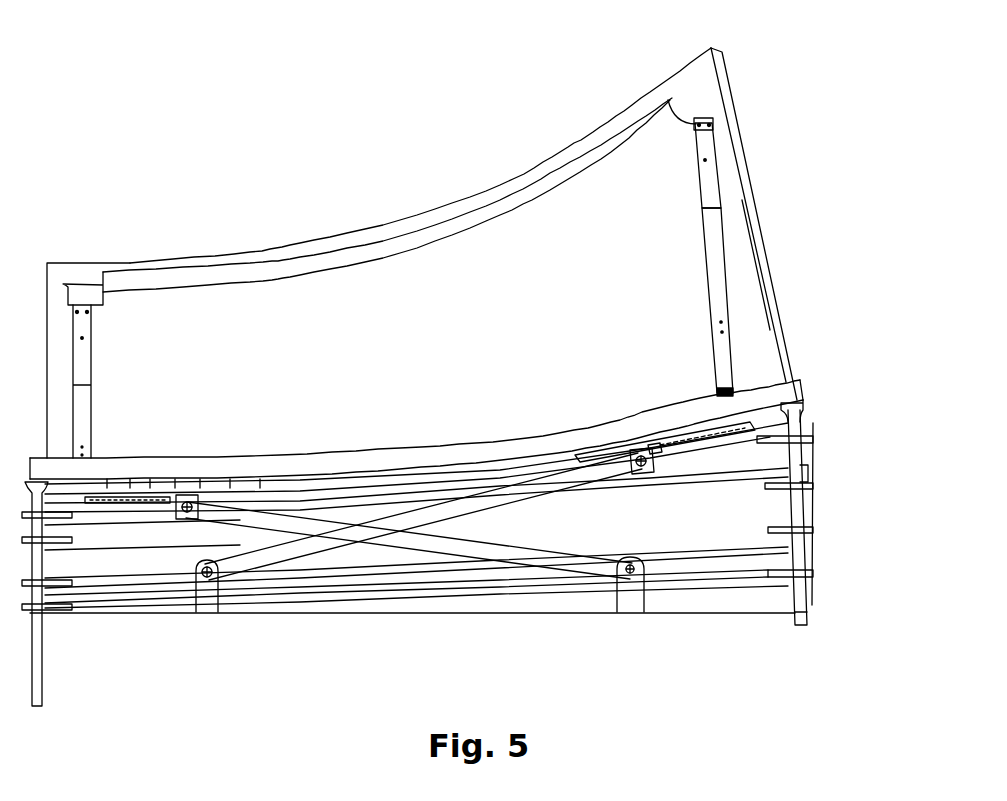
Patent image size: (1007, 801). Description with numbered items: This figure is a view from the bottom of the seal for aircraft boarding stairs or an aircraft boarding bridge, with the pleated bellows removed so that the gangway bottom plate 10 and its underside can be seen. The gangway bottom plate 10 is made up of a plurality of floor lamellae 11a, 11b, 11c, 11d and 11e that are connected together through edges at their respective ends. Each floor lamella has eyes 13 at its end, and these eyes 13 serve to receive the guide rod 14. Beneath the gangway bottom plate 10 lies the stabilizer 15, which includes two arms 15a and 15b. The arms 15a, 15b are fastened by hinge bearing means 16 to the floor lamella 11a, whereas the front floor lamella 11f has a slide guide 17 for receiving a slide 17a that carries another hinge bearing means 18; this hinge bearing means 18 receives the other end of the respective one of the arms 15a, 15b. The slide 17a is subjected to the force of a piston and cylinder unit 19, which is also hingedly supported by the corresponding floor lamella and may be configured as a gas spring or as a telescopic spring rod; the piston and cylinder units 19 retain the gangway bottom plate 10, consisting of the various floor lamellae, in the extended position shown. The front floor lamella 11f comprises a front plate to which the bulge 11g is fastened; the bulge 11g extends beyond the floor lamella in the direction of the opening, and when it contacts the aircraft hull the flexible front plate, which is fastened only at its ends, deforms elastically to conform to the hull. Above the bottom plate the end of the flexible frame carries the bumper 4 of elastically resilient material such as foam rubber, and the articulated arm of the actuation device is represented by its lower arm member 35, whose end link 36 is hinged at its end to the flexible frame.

The bumper 4 is at (738, 149).
The end link 36 is at (708, 178).
The lower arm member 35 is at (710, 260).
The piston and cylinder unit 19 is at (693, 405).
The slide guide 17 is at (678, 420).
The slide 17a is at (650, 445).
The hinge bearing means 18 is at (630, 455).
The bulge 11g is at (795, 388).
The front floor lamella 11f is at (800, 420).
The floor lamella 11e is at (805, 422).
The floor lamella 11d is at (805, 453).
The eyes 13 is at (813, 482).
The floor lamella 11c is at (807, 508).
The floor lamella 11b is at (810, 558).
The floor lamella 11a is at (805, 594).
The gangway bottom plate 10 is at (838, 620).
The guide rod 14 is at (797, 618).
The hinge bearing means 16 is at (633, 603).
The stabilizer 15 is at (417, 580).
The arm 15a is at (540, 553).
The arm 15b is at (505, 501).